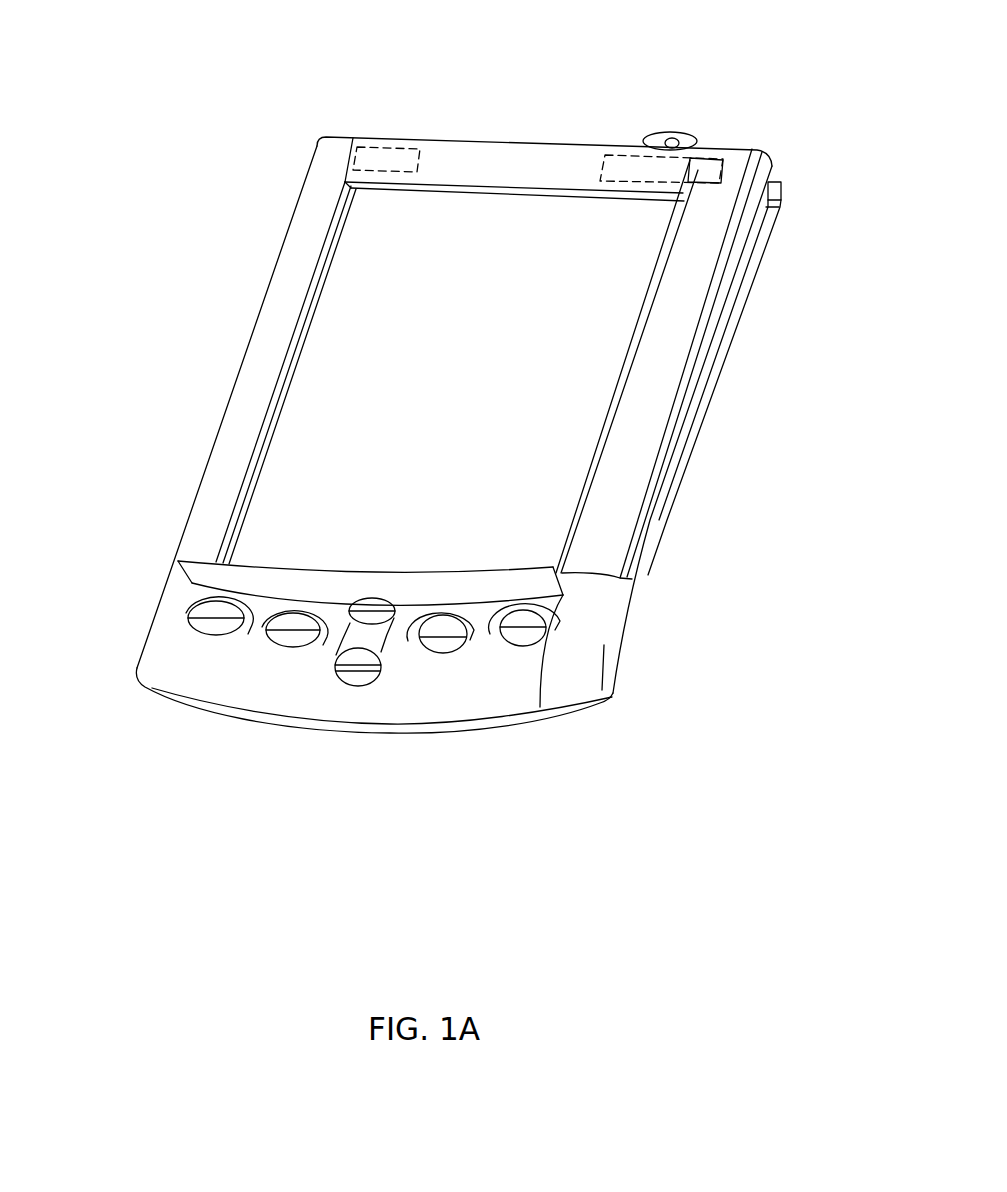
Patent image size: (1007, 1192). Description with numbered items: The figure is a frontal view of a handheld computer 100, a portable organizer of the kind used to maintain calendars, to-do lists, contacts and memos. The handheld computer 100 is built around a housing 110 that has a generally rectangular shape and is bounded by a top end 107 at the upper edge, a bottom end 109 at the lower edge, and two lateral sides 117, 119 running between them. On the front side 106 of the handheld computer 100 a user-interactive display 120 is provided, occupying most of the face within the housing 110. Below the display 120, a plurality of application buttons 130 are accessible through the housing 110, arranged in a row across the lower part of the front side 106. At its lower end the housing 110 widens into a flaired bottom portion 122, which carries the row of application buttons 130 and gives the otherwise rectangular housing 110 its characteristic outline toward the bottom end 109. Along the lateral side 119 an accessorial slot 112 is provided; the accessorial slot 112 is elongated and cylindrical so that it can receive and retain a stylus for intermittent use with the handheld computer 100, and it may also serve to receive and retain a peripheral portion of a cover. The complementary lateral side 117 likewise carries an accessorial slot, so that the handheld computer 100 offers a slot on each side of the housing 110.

The handheld computer 100 is at (288, 136).
The front side 106 is at (290, 271).
The top end 107 is at (457, 136).
The bottom end 109 is at (541, 708).
The housing 110 is at (268, 218).
The first accessorial slot 112 is at (762, 218).
The lateral side 117 is at (220, 432).
The lateral side 119 is at (672, 408).
The user-interactive display 120 is at (357, 323).
The flaired bottom portion 122 is at (180, 602).
The application buttons 130 is at (673, 135).